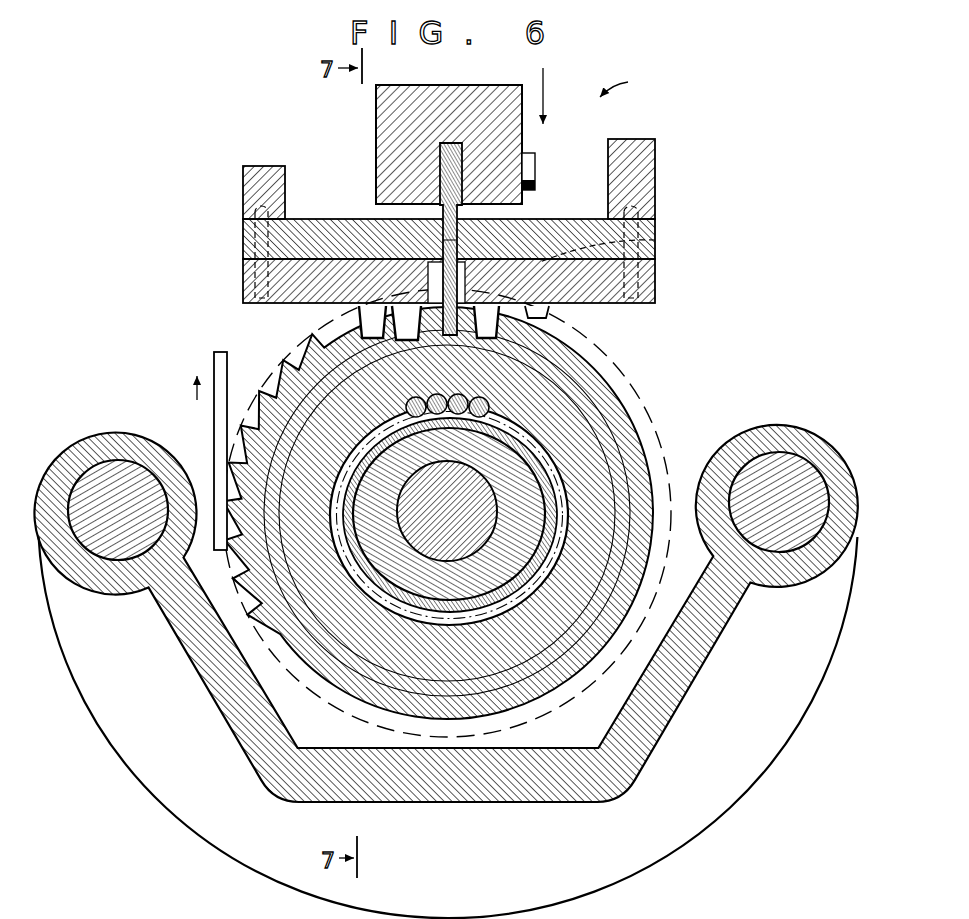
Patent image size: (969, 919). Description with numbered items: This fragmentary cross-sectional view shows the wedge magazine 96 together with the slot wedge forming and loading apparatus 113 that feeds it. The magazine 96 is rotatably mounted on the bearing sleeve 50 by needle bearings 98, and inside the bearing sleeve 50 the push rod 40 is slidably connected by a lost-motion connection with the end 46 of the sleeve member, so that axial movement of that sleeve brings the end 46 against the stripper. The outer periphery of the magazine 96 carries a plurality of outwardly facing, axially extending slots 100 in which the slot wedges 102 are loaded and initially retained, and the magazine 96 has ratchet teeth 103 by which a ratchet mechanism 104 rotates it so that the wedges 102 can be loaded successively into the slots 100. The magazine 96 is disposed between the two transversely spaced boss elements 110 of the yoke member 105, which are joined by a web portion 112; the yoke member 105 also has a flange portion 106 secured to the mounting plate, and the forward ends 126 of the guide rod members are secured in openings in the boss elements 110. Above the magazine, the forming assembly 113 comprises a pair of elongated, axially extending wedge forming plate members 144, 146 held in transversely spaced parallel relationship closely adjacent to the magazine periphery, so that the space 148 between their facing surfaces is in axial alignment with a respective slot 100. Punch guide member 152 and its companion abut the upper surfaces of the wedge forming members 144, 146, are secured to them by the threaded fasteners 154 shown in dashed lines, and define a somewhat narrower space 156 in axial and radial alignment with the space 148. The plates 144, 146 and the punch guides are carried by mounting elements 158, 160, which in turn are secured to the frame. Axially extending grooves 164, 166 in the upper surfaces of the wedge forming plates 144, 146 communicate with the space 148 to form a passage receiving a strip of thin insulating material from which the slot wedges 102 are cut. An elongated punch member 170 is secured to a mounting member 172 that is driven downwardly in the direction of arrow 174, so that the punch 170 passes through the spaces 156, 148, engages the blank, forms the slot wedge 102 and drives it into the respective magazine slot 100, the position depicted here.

The push rod 40 is at (478, 524).
The end of sleeve member 46 is at (520, 490).
The bearing sleeve 50 is at (546, 447).
The wedge magazine 96 is at (620, 384).
The needle bearings 98 is at (481, 398).
The slot wedge receiving slots 100 is at (385, 318).
The slot wedges 102 is at (486, 330).
The ratchet teeth 103 is at (314, 343).
The ratchet mechanism 104 is at (227, 378).
The yoke member 105 is at (154, 806).
The flange portion 106 is at (252, 856).
The boss elements 110 is at (131, 434).
The web portion 112 is at (551, 803).
The slot wedge forming and loading apparatus 113 is at (636, 80).
The forward ends of guide rod members 126 is at (107, 543).
The wedge forming plate member 144 is at (465, 219).
The wedge forming plate member 146 is at (655, 293).
The space 148 is at (566, 315).
The punch guide member 152 is at (655, 233).
The threaded fasteners 154 is at (655, 241).
The space 156 is at (503, 212).
The mounting element 158 is at (243, 170).
The mounting element 160 is at (655, 152).
The groove 164 is at (443, 238).
The groove 166 is at (500, 224).
The punch member 170 is at (440, 204).
The mounting member 172 is at (376, 110).
The arrow 174 is at (575, 88).